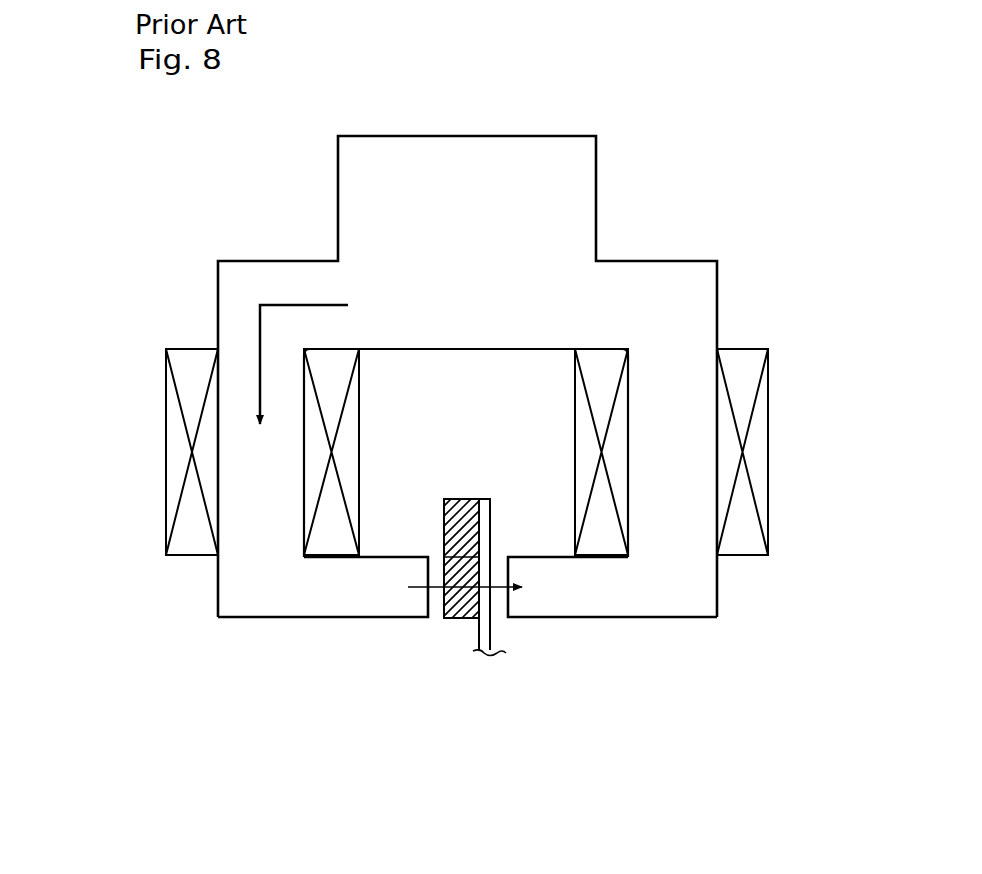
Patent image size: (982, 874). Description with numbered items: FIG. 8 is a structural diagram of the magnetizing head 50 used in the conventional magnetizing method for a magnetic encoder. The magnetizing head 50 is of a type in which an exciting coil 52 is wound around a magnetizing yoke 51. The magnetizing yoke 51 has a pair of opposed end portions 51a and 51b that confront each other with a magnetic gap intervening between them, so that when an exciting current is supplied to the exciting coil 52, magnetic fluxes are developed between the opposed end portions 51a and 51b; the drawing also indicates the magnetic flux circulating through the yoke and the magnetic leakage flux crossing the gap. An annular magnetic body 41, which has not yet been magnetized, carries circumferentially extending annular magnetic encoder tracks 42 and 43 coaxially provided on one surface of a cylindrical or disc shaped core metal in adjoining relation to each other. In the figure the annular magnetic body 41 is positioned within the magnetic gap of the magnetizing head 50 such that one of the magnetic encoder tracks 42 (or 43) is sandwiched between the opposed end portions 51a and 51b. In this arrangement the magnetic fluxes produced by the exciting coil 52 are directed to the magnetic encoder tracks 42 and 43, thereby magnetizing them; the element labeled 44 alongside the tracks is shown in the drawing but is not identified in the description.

The magnetizing head 50 is at (448, 363).
The magnetizing yoke 51 is at (252, 268).
The opposed end portion 51a is at (398, 612).
The opposed end portion 51b is at (535, 590).
The exciting coil 52 is at (166, 428).
The annular magnetic body 41 is at (475, 600).
The magnetic encoder track 42 is at (450, 605).
The magnetic encoder track 43 is at (445, 522).
The plate 44 is at (490, 532).